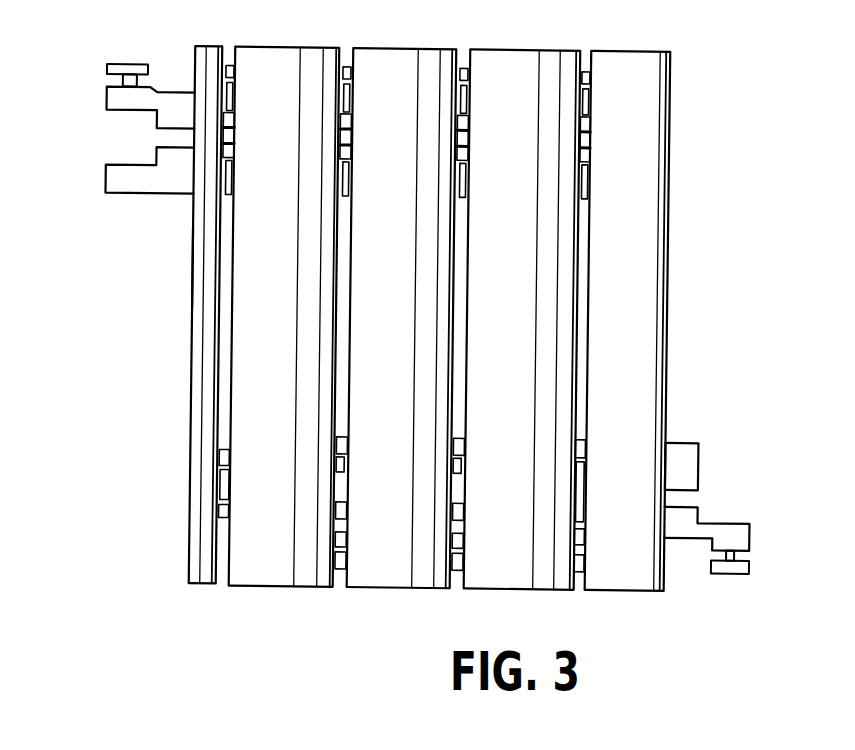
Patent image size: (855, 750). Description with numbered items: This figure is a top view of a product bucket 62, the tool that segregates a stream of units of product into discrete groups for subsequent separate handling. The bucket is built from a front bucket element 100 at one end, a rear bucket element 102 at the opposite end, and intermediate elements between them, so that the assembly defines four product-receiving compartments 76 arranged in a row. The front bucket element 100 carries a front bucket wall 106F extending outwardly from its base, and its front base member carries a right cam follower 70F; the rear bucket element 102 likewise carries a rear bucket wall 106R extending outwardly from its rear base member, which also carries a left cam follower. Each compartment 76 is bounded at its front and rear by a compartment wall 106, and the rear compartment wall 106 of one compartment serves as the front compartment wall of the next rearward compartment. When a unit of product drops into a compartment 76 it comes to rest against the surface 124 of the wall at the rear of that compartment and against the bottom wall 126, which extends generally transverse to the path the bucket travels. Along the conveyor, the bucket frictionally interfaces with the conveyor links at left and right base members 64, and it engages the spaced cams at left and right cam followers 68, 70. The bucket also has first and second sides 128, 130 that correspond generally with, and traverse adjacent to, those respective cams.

The product bucket 62 is at (100, 339).
The base member 64 is at (685, 440).
The left cam follower 68 is at (732, 573).
The right cam follower 70 is at (345, 72).
The right cam follower 70F is at (137, 64).
The product-receiving compartment 76 is at (399, 62).
The front bucket element 100 is at (170, 407).
The rear bucket element 102 is at (692, 144).
The compartment wall 106 is at (304, 80).
The front bucket wall 106F is at (192, 270).
The rear bucket wall 106R is at (670, 210).
The surface 124 is at (292, 530).
The bottom wall 126 is at (265, 570).
The first side 128 is at (378, 590).
The second side 130 is at (498, 48).